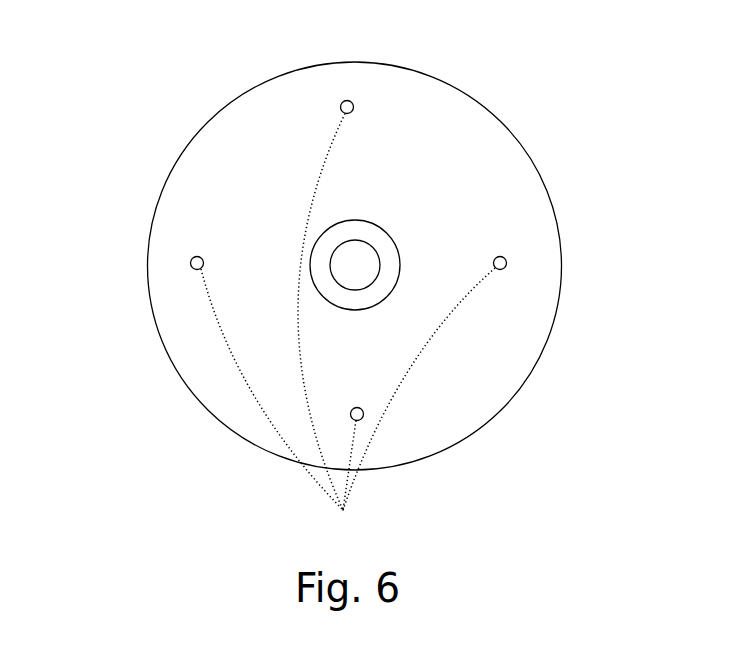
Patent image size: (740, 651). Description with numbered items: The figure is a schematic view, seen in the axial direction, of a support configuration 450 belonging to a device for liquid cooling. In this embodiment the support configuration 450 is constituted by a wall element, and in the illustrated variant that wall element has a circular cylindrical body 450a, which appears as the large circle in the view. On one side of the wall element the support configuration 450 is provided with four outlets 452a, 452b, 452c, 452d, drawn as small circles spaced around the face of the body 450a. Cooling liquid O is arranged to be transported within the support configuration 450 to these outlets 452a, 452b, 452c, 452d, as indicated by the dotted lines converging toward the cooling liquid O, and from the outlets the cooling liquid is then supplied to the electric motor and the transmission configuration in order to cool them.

The support configuration 450 is at (333, 264).
The circular cylindrical body 450a is at (188, 393).
The outlet 452a is at (191, 259).
The outlet 452b is at (342, 102).
The outlet 452c is at (505, 268).
The outlet 452d is at (362, 420).
The cooling liquid O is at (323, 490).